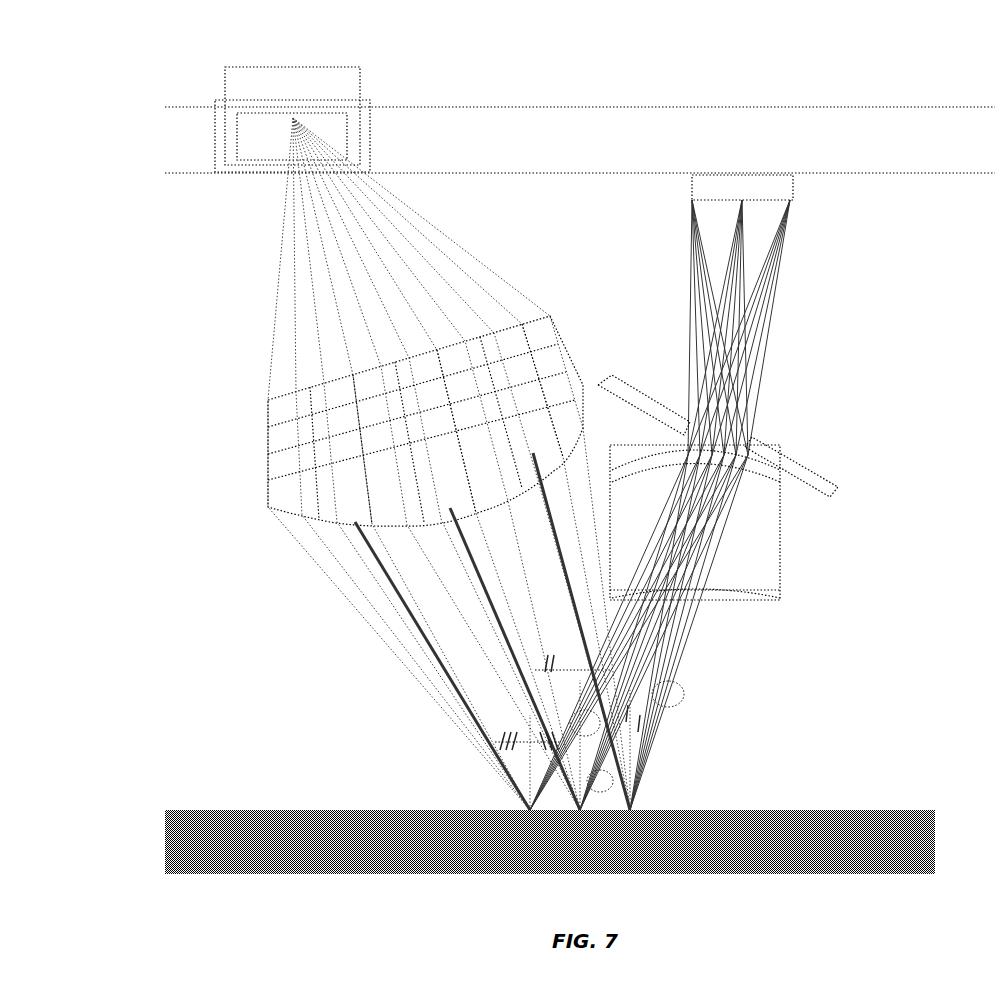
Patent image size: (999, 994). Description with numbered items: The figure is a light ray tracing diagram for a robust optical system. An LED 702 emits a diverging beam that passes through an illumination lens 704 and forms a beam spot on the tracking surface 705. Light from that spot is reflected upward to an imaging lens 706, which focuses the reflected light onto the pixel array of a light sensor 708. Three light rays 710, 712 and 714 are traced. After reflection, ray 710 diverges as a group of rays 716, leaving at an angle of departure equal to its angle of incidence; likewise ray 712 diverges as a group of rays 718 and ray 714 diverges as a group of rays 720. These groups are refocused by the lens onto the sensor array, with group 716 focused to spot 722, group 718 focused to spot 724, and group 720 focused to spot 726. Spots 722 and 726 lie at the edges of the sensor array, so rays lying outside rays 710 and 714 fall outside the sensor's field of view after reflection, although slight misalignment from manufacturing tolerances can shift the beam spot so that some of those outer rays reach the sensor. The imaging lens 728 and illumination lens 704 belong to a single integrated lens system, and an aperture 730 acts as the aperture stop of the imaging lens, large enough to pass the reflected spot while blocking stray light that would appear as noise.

The LED 702 is at (327, 95).
The illumination lens 704 is at (250, 443).
The tracking surface 705 is at (235, 812).
The imaging lens 706 is at (820, 531).
The light sensor 708 is at (792, 188).
The first light ray 710 is at (403, 607).
The second light ray 712 is at (473, 563).
The third light ray 714 is at (548, 522).
The group of rays 716 is at (570, 715).
The group of rays 718 is at (617, 757).
The group of rays 720 is at (685, 690).
The focused spot 722 is at (795, 202).
The focused spot 724 is at (787, 203).
The focused spot 726 is at (693, 198).
The imaging lens 728 is at (765, 582).
The aperture 730 is at (743, 438).